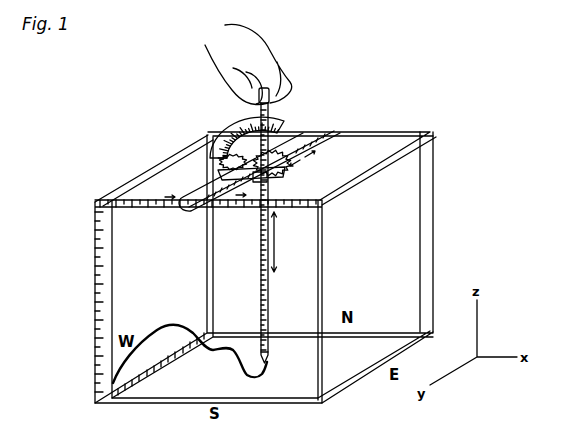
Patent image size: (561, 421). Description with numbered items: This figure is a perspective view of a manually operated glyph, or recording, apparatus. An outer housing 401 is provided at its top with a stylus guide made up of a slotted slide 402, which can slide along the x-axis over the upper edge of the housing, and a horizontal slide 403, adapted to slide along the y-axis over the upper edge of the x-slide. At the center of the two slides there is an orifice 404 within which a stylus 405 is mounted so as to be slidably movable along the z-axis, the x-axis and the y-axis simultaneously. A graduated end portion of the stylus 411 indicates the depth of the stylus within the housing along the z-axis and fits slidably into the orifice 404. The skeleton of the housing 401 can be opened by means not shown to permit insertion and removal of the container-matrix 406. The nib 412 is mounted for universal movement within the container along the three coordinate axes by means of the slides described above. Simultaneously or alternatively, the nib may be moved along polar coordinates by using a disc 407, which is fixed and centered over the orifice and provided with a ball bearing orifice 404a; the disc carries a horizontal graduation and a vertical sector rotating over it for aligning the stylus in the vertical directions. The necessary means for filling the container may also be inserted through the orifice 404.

The outer housing 401 is at (433, 246).
The slotted slide 402 is at (322, 145).
The horizontal slide 403 is at (289, 164).
The orifice 404 is at (272, 138).
The ball bearing orifice 404a is at (263, 174).
The stylus 405 is at (290, 86).
The container-matrix 406 is at (421, 275).
The disc 407 is at (233, 160).
The graduated end portion of the stylus 411 is at (266, 293).
The nib 412 is at (269, 364).